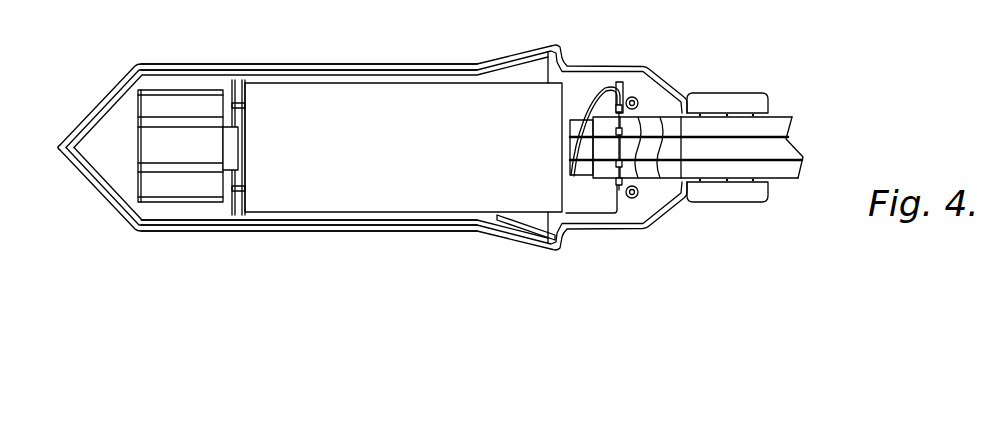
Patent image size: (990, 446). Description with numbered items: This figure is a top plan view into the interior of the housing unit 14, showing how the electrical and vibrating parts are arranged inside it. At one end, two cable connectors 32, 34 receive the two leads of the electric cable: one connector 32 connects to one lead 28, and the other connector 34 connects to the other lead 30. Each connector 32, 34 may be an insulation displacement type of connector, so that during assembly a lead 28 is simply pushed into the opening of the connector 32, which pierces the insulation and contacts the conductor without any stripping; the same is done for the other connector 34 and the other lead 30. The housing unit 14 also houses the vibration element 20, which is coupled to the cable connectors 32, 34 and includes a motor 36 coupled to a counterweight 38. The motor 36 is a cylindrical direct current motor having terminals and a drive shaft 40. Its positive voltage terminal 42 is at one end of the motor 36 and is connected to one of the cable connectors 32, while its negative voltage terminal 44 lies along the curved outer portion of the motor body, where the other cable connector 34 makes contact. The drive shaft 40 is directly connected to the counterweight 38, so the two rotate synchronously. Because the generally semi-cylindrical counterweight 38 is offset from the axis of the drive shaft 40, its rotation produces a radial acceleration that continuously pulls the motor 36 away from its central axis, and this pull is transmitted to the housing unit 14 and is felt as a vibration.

The housing unit 14 is at (198, 52).
The vibration element 20 is at (377, 93).
The lead 28 is at (778, 122).
The lead 30 is at (781, 177).
The cable connector 32 is at (600, 100).
The cable connector 34 is at (530, 218).
The motor 36 is at (312, 98).
The counterweight 38 is at (153, 95).
The drive shaft 40 is at (238, 143).
The positive voltage terminal 42 is at (570, 157).
The negative voltage terminal 44 is at (447, 203).